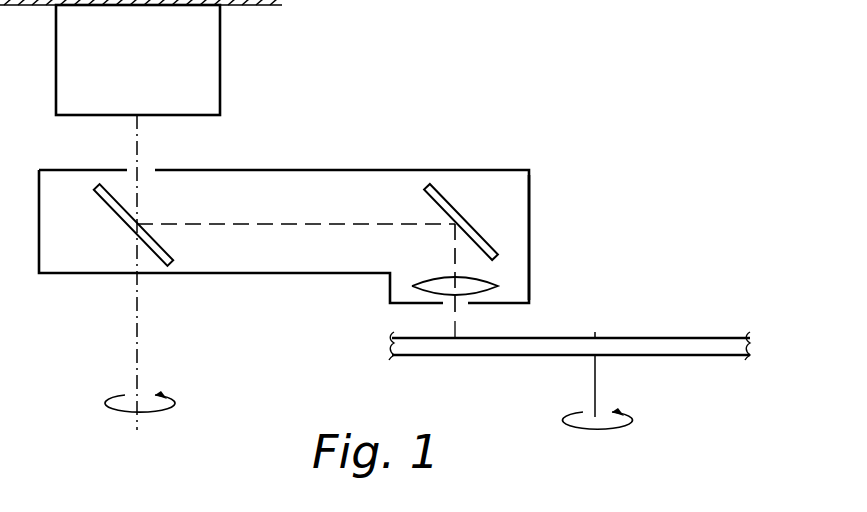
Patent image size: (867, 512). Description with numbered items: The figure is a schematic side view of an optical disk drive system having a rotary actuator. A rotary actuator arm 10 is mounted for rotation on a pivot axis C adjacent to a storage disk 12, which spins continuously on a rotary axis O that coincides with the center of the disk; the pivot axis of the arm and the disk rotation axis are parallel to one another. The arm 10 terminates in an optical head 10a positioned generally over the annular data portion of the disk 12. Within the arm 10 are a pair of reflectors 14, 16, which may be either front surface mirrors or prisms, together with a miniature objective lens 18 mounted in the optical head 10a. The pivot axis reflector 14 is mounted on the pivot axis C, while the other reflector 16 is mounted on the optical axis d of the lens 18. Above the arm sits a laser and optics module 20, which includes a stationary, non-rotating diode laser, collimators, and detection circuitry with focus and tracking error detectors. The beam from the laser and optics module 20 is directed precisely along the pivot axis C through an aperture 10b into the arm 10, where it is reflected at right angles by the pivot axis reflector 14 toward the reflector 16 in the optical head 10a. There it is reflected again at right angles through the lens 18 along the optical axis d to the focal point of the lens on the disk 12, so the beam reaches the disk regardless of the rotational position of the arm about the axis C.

The rotary actuator arm 10 is at (365, 172).
The optical head 10a is at (529, 222).
The aperture 10b is at (149, 167).
The storage disk 12 is at (678, 338).
The pivot axis reflector 14 is at (122, 222).
The reflector 16 is at (455, 200).
The miniature objective lens 18 is at (440, 274).
The laser and optics module 20 is at (220, 72).
The pivot axis C is at (135, 337).
The optical axis d is at (457, 325).
The rotary axis O is at (595, 395).